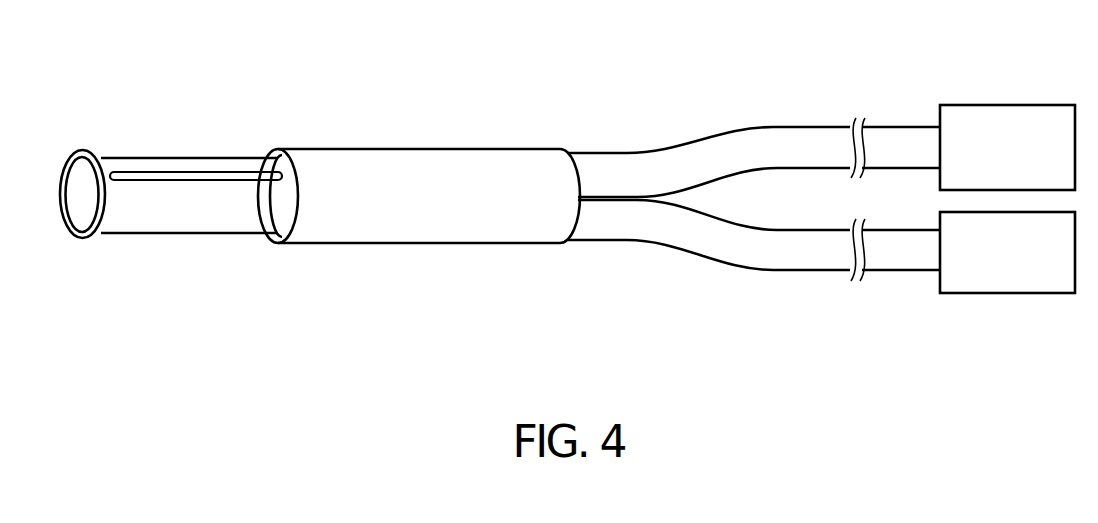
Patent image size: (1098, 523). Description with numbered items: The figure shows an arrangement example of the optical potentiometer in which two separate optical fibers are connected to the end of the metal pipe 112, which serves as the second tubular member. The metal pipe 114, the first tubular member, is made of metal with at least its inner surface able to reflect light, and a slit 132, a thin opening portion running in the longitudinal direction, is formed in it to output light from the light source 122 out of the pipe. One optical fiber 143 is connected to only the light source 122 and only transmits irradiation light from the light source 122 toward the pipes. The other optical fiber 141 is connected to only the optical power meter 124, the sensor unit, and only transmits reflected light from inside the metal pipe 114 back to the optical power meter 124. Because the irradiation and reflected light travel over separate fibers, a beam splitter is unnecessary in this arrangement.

The metal pipe 112 is at (452, 149).
The metal pipe 114 is at (184, 234).
The slit 132 is at (181, 172).
The optical fiber 143 is at (777, 127).
The optical fiber 141 is at (788, 272).
The light source 122 is at (1047, 105).
The optical power meter 124 is at (1047, 293).